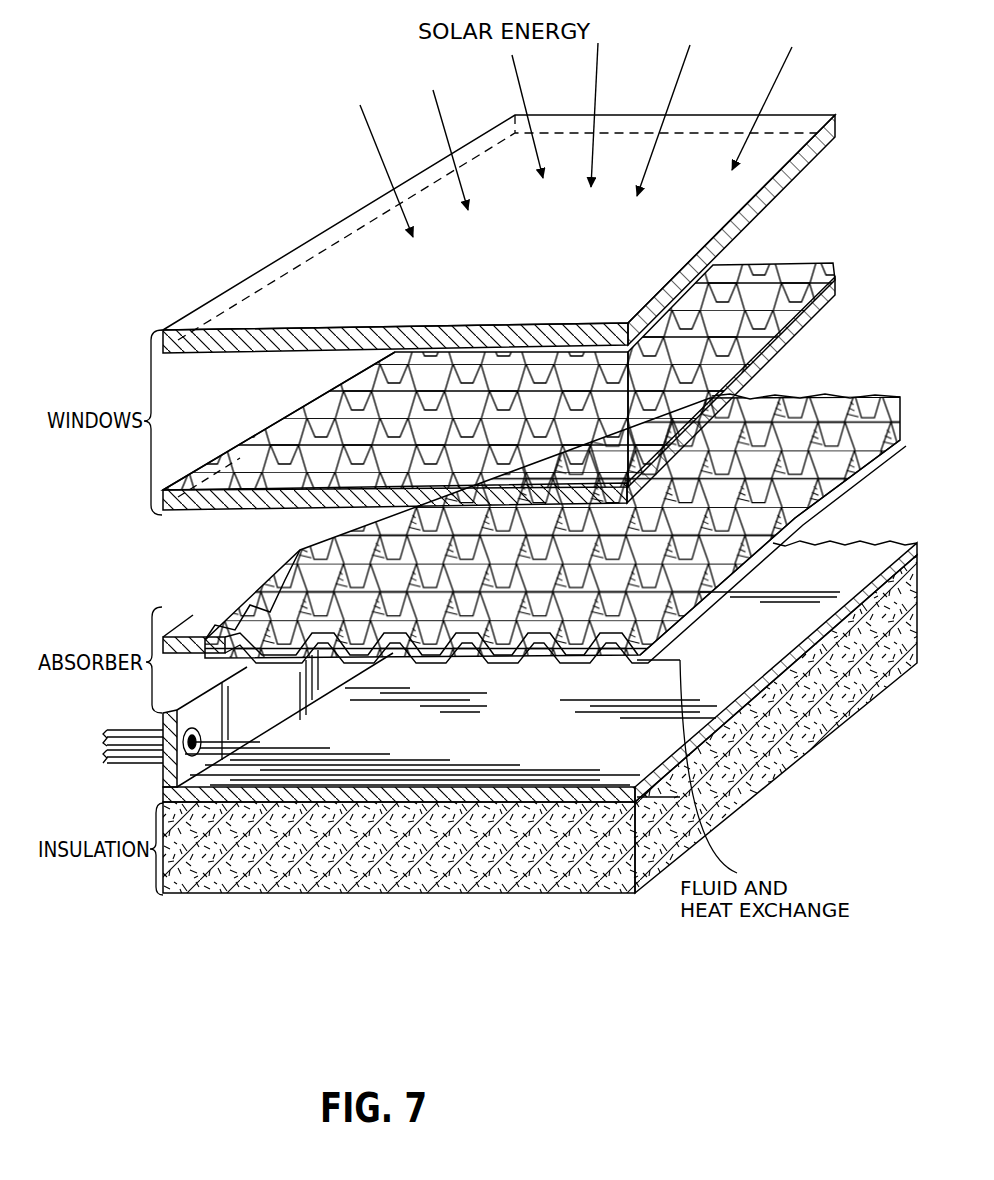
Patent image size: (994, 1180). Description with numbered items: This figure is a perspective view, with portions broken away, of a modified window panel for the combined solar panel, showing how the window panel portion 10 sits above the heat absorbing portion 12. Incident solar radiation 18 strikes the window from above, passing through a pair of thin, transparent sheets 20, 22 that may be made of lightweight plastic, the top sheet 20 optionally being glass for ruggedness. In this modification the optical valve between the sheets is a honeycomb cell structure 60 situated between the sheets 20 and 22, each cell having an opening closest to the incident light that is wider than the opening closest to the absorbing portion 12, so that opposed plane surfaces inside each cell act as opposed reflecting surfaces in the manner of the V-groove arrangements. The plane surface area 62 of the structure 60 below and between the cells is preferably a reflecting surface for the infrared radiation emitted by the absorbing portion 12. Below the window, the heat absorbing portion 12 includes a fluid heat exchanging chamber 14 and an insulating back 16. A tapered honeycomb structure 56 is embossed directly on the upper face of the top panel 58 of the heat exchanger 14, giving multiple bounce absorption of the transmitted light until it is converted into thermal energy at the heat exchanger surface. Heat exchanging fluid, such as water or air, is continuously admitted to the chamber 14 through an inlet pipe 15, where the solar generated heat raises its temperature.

The window panel portion 10 is at (133, 470).
The heat absorbing portion 12 is at (280, 412).
The fluid heat exchanging chamber 14 is at (162, 784).
The inlet pipe 15 is at (143, 765).
The insulating back 16 is at (150, 878).
The incident solar radiation 18 is at (377, 155).
The top transparent sheet 20 is at (763, 210).
The lower transparent sheet 22 is at (288, 505).
The tapered honeycomb structure 56 is at (262, 605).
The top panel 58 is at (208, 652).
The honeycomb cell structure 60 is at (800, 325).
The plane surface area 62 is at (210, 468).